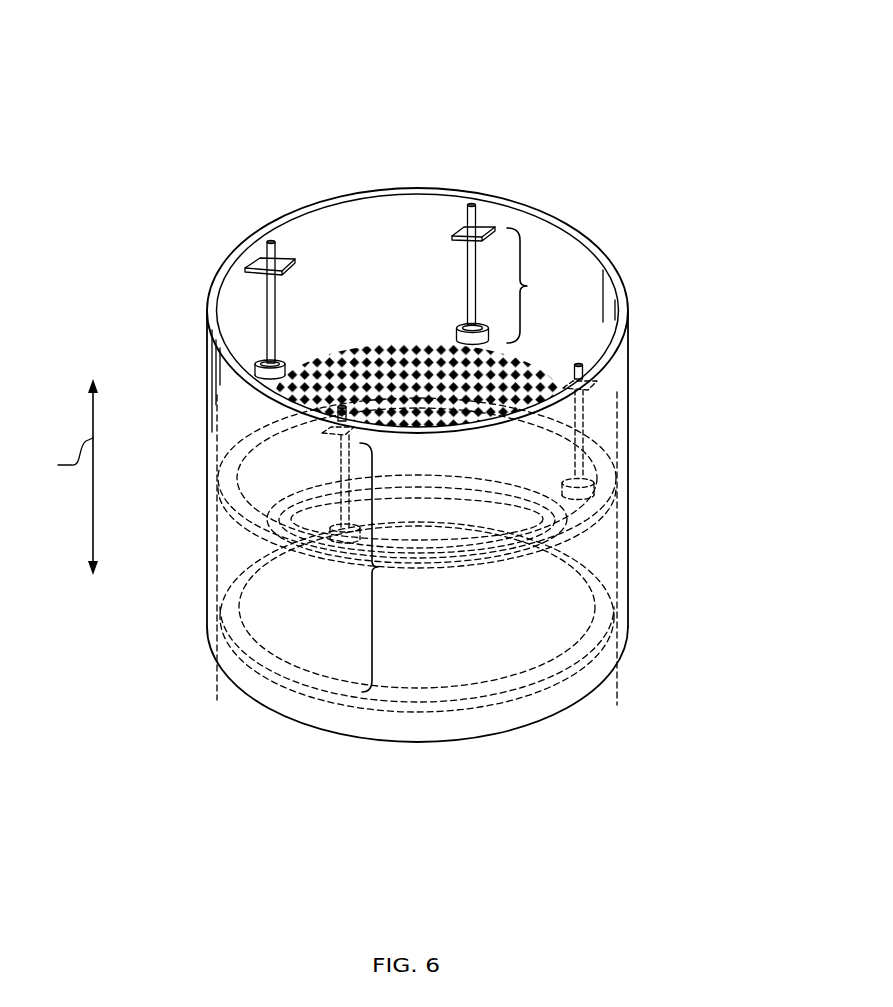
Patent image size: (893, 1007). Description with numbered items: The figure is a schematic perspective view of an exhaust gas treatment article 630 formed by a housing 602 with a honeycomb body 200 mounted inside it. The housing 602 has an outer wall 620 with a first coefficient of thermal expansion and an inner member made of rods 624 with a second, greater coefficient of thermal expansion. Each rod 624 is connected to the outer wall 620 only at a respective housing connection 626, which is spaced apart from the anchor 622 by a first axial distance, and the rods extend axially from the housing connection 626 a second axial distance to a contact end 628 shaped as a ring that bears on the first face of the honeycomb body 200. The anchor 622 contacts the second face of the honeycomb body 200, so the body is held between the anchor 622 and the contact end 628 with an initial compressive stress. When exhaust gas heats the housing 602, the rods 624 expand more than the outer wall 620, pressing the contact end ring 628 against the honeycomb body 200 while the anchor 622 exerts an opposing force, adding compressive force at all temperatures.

The exhaust gas treatment article 630 is at (392, 376).
The housing 602 is at (421, 308).
The rods 624 is at (467, 277).
The housing connection 626 is at (494, 226).
The contact end 628 is at (445, 335).
The honeycomb body 200 is at (364, 364).
The outer wall 620 is at (628, 485).
The anchor 622 is at (240, 656).